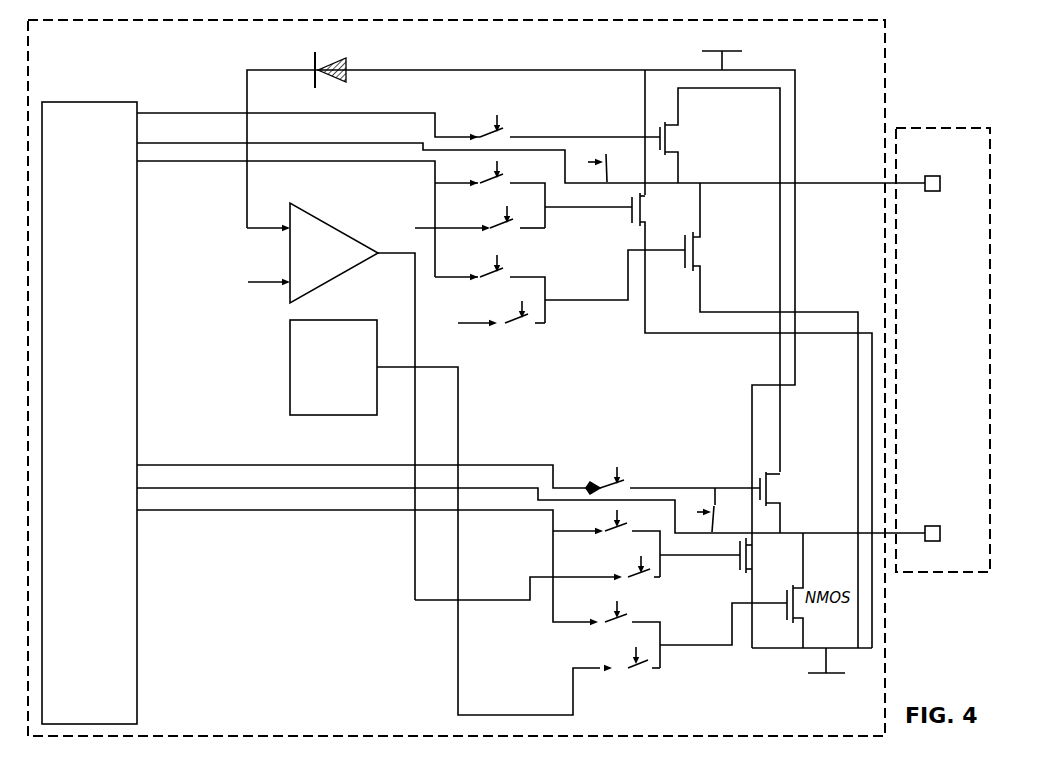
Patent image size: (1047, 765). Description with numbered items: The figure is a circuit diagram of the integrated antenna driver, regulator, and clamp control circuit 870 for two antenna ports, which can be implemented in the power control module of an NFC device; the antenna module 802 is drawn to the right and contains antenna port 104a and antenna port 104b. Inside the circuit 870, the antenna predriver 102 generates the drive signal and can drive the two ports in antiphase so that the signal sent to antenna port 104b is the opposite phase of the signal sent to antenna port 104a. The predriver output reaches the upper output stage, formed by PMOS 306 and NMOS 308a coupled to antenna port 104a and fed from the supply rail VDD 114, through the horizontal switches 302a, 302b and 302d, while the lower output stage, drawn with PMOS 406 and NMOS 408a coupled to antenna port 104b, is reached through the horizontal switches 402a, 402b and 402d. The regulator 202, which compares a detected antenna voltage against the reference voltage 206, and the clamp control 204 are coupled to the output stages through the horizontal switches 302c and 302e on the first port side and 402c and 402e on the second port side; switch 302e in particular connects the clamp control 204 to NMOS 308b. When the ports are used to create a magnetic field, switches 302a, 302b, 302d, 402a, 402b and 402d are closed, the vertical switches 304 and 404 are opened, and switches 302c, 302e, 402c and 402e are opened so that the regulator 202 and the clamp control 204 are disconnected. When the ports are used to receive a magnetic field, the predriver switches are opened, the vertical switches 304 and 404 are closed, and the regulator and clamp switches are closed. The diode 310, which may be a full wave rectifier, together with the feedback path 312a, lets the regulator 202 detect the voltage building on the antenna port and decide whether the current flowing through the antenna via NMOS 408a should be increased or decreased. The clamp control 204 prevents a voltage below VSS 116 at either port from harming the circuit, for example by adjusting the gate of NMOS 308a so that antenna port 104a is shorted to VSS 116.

The integrated antenna driver, regulator, and clamp control circuit 870 is at (886, 22).
The antenna module 802 is at (926, 128).
The antenna predriver 102 is at (90, 102).
The feedback path 312a is at (163, 143).
The diode 310 is at (330, 66).
The regulator 202 is at (318, 221).
The reference voltage 206 is at (241, 299).
The clamp control 204 is at (330, 416).
The horizontal switch 302a is at (503, 110).
The horizontal switch 302b is at (493, 199).
The horizontal switch 302c is at (519, 239).
The horizontal switch 302d is at (493, 259).
The horizontal switch 302e is at (505, 333).
The vertical switch 304 is at (608, 157).
The PMOS 306 is at (698, 120).
The NMOS 308a is at (655, 211).
The NMOS 308b is at (710, 247).
The supply voltage VDD 114 is at (745, 42).
The antenna port 104a is at (940, 184).
The antenna port 104b is at (940, 534).
The horizontal switch 402a is at (618, 464).
The horizontal switch 402b is at (612, 544).
The horizontal switch 402c is at (637, 586).
The horizontal switch 402d is at (610, 606).
The horizontal switch 402e is at (635, 676).
The vertical switch 404 is at (716, 508).
The PMOS transistor 406 is at (800, 474).
The NMOS 408a is at (757, 565).
The VSS 116 is at (808, 689).